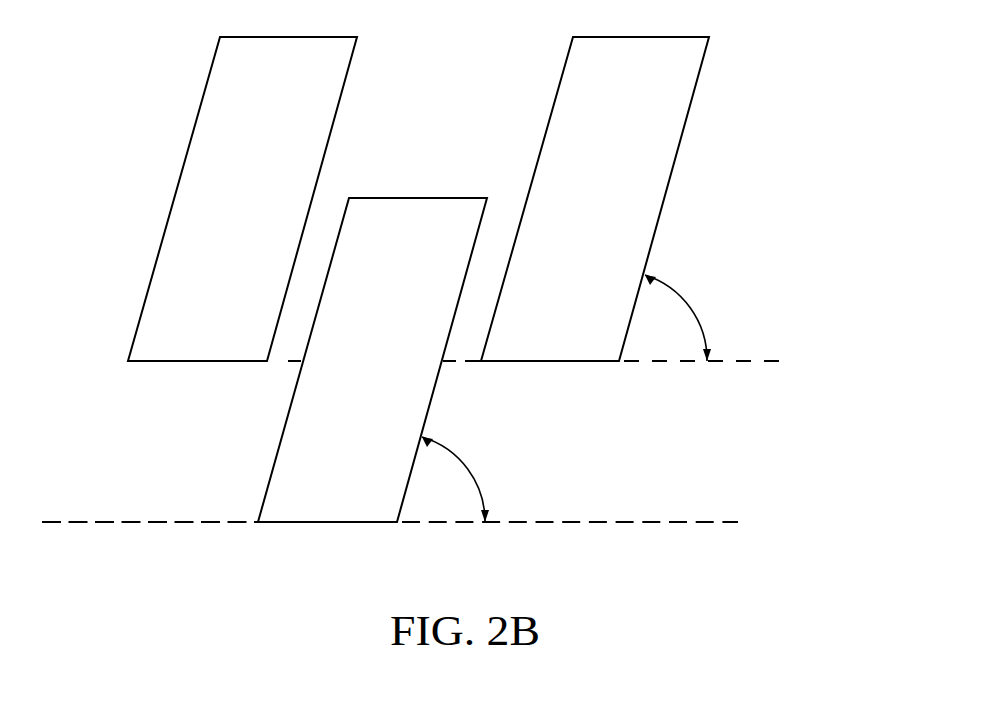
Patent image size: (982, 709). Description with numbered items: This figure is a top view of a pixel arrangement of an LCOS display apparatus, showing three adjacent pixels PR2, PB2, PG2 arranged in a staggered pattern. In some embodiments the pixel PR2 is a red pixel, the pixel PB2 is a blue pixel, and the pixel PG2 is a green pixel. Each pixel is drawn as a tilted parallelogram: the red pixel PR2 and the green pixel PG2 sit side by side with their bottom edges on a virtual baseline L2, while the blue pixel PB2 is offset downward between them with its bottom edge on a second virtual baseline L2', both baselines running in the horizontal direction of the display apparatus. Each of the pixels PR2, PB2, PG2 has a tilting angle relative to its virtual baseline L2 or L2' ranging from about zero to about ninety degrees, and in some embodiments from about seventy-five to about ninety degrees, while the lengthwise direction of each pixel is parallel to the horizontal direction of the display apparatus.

The red pixel PR2 is at (242, 199).
The green pixel PG2 is at (595, 199).
The blue pixel PB2 is at (372, 360).
The virtual baseline L2 is at (558, 359).
The virtual baseline L2' is at (414, 521).